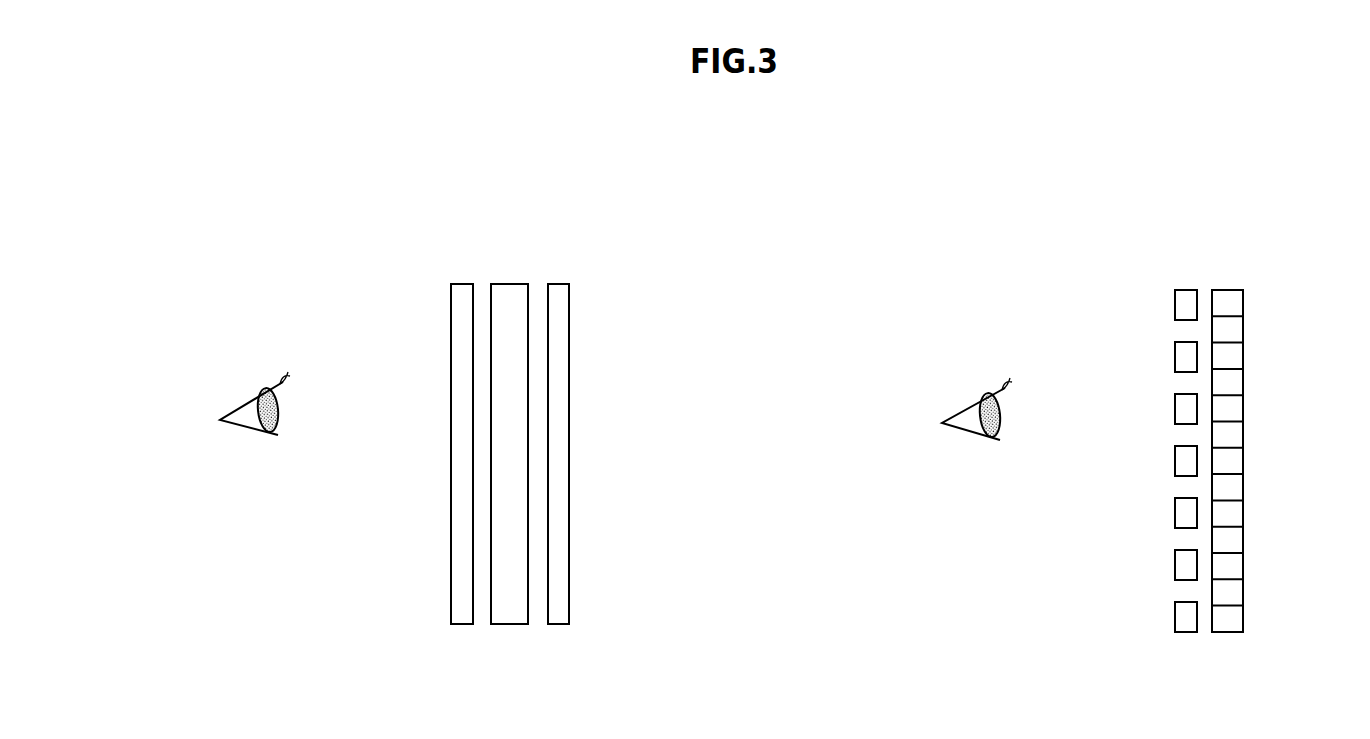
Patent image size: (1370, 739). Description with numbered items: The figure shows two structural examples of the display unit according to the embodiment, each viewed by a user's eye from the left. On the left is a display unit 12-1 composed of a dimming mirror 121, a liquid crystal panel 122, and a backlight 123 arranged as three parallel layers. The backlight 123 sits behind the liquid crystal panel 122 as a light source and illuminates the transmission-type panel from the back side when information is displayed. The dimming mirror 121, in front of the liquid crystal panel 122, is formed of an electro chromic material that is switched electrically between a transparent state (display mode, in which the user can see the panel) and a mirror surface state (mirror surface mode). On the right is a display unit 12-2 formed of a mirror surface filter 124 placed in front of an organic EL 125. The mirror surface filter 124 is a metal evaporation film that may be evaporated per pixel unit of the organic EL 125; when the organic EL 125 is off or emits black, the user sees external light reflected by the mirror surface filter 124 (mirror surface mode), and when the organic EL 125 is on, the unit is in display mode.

The display unit 12-1 is at (402, 213).
The display unit 12-2 is at (1128, 218).
The dimming mirror 121 is at (463, 283).
The liquid crystal panel 122 is at (510, 284).
The backlight 123 is at (569, 295).
The mirror surface filter 124 is at (1187, 290).
The organic EL 125 is at (1243, 302).